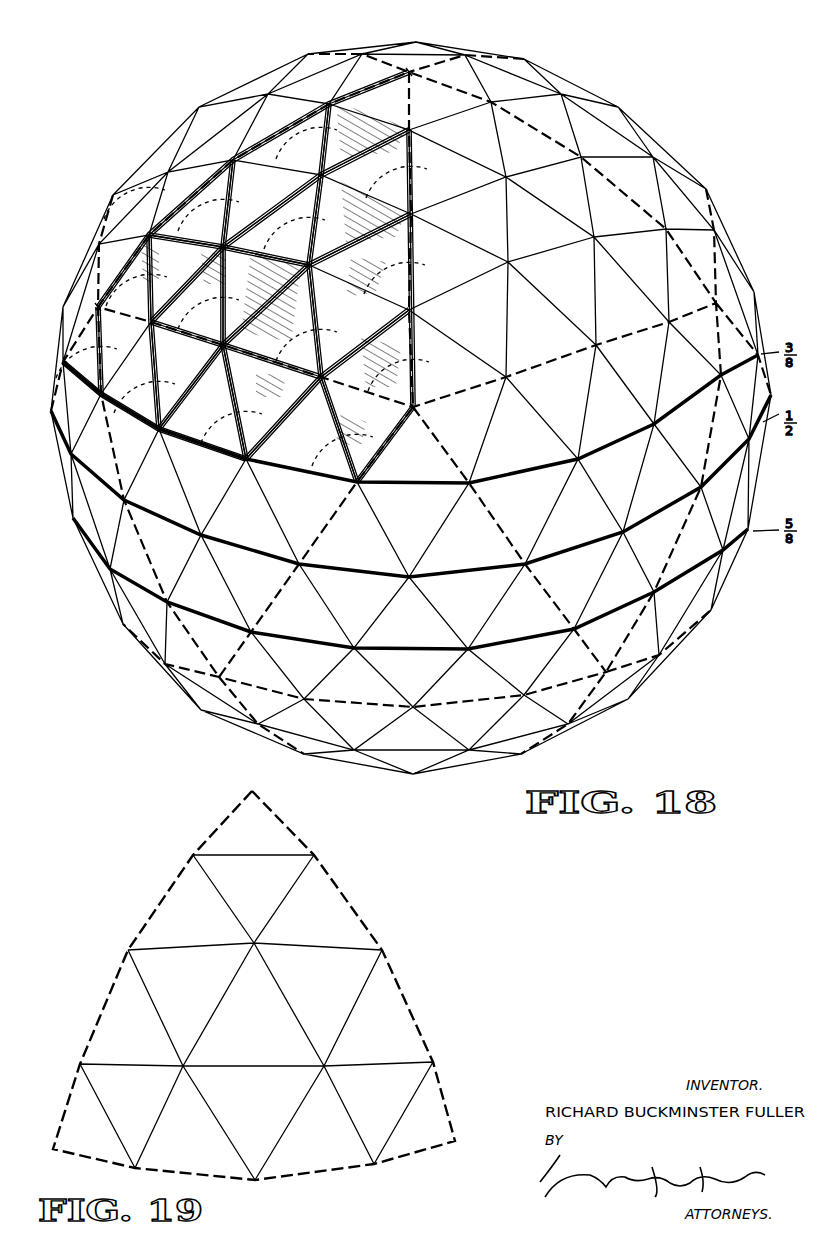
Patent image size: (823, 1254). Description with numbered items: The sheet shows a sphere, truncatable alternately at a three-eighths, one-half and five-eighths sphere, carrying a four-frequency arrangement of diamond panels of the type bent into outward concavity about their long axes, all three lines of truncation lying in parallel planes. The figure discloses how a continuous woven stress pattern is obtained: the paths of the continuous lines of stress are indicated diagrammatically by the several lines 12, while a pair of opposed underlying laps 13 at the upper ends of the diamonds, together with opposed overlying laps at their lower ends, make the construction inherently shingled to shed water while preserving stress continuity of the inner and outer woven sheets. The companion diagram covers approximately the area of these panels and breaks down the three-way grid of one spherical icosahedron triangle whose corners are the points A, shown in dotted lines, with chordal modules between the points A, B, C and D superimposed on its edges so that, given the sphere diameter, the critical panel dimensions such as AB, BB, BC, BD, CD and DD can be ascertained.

In FIG. 18, the lines of stress 12 is at (413, 244).
In FIG. 18, the underlying laps 13 is at (392, 212).
In FIG. 18, the spherical icosahedron triangle vertex A is at (410, 68).
In FIG. 19, the spherical icosahedron triangle vertex A is at (253, 964).
In FIG. 19, the chordal module point B is at (256, 1015).
In FIG. 19, the chordal module point C is at (254, 1070).
In FIG. 19, the chordal module point D is at (255, 1001).